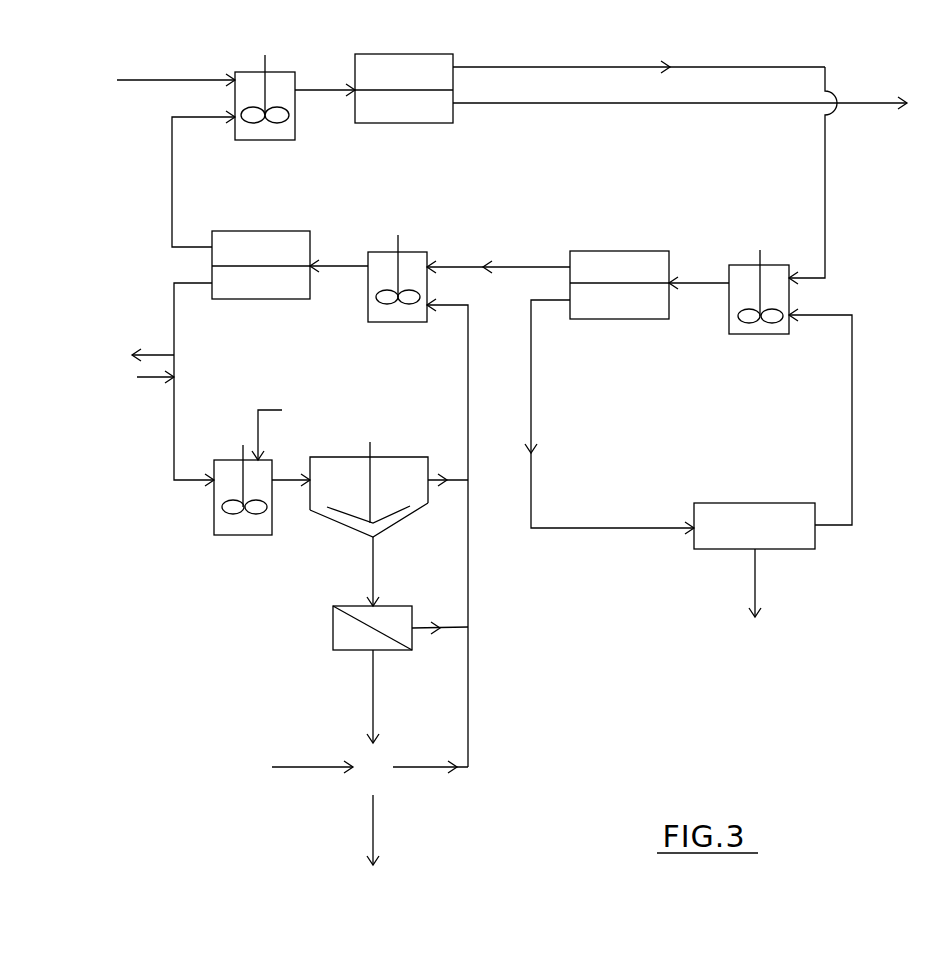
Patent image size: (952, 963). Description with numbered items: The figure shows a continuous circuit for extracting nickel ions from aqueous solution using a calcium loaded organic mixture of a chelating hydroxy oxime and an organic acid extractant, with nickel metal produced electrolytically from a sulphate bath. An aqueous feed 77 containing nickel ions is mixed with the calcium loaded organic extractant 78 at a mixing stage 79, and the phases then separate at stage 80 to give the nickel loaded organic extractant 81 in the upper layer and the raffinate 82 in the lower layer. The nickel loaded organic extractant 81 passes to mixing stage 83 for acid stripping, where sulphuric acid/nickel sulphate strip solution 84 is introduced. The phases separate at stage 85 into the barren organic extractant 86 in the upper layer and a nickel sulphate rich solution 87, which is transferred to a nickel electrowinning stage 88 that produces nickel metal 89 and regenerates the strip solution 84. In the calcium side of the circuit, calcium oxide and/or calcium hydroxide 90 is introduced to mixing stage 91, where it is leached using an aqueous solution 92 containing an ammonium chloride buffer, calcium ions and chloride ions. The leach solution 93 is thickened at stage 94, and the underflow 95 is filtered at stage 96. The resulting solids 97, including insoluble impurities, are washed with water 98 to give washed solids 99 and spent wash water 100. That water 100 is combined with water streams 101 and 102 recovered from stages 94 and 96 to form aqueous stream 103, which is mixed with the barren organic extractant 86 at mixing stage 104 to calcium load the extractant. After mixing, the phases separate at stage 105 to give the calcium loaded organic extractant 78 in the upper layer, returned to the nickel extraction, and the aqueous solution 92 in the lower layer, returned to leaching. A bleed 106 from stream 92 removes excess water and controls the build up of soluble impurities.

The aqueous feed 77 is at (176, 70).
The calcium loaded organic extractant 78 is at (210, 187).
The mixing stage 79 is at (265, 112).
The separation stage 80 is at (404, 108).
The nickel loaded organic extractant 81 is at (622, 161).
The raffinate 82 is at (673, 105).
The mixing stage 83 is at (759, 307).
The sulphuric acid/nickel sulphate strip solution 84 is at (836, 417).
The separation stage 85 is at (619, 303).
The barren organic extractant 86 is at (540, 260).
The nickel sulphate rich solution 87 is at (609, 412).
The nickel electrowinning stage 88 is at (754, 526).
The nickel metal 89 is at (758, 599).
The calcium oxide and/or calcium hydroxide 90 is at (281, 428).
The mixing stage 91 is at (243, 505).
The aqueous solution 92 is at (228, 378).
The leach solution 93 is at (291, 466).
The thickening stage 94 is at (369, 484).
The underflow 95 is at (358, 571).
The filtering stage 96 is at (354, 628).
The solids 97 is at (373, 714).
The water 98 is at (296, 766).
The washed solids 99 is at (368, 843).
The spent wash water 100 is at (430, 782).
The water stream 101 is at (445, 463).
The water stream 102 is at (440, 612).
The aqueous stream 103 is at (445, 533).
The mixing stage 104 is at (397, 294).
The separation stage 105 is at (261, 281).
The bleed 106 is at (133, 352).